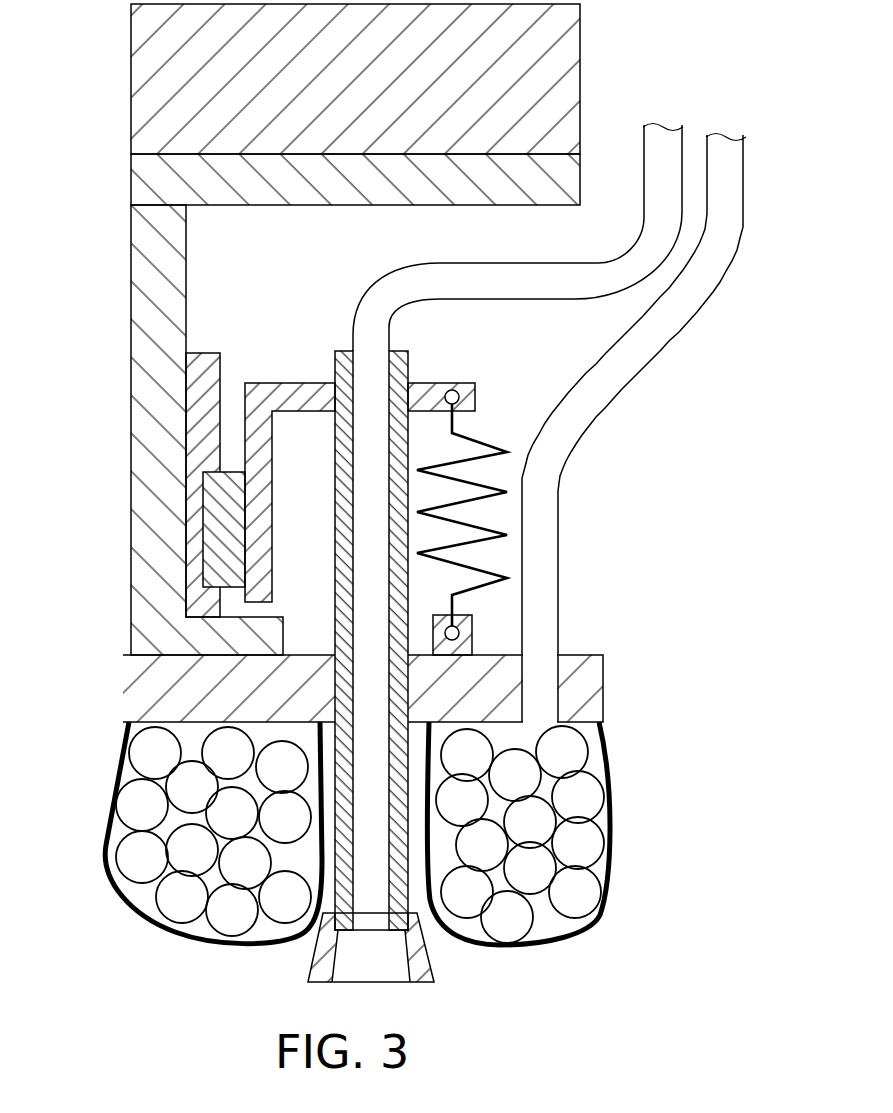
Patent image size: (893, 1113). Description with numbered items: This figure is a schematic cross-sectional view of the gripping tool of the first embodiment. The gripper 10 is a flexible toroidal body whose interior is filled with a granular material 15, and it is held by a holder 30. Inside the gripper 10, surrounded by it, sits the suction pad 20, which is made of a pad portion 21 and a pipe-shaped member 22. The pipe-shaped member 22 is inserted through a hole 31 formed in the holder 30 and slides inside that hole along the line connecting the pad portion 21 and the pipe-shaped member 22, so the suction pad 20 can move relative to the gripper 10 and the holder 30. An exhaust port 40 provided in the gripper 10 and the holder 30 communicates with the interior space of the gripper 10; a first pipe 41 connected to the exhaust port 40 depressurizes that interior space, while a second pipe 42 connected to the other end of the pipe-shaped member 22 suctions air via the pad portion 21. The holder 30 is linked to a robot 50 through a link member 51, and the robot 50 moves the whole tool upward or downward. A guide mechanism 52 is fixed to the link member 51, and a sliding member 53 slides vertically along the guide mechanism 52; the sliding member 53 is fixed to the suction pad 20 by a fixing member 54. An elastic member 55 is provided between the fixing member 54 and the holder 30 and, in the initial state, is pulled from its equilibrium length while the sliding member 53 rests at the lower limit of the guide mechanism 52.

The robot 50 is at (143, 72).
The link member 51 is at (143, 239).
The guide mechanism 52 is at (197, 385).
The sliding member 53 is at (215, 488).
The fixing member 54 is at (253, 528).
The elastic member 55 is at (485, 488).
The holder 30 is at (142, 707).
The hole 31 is at (223, 677).
The gripper 10 is at (138, 915).
The granular material 15 is at (143, 858).
The suction pad 20 is at (236, 696).
The pad portion 21 is at (322, 975).
The pipe-shaped member 22 is at (340, 880).
The exhaust port 40 is at (555, 387).
The first pipe 41 is at (722, 140).
The second pipe 42 is at (660, 130).